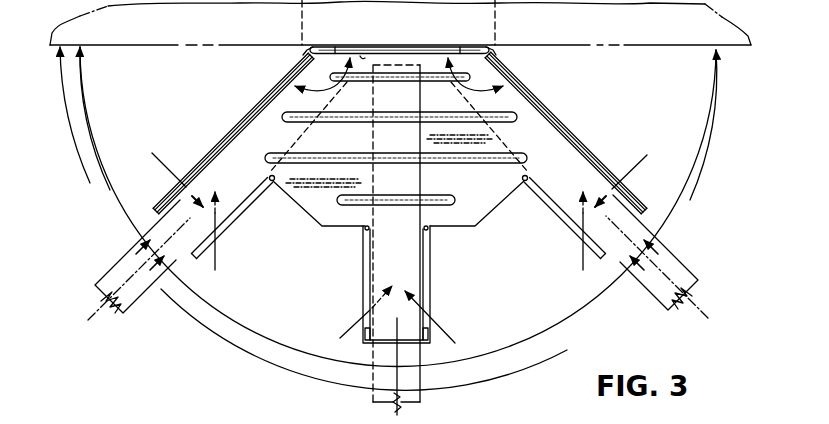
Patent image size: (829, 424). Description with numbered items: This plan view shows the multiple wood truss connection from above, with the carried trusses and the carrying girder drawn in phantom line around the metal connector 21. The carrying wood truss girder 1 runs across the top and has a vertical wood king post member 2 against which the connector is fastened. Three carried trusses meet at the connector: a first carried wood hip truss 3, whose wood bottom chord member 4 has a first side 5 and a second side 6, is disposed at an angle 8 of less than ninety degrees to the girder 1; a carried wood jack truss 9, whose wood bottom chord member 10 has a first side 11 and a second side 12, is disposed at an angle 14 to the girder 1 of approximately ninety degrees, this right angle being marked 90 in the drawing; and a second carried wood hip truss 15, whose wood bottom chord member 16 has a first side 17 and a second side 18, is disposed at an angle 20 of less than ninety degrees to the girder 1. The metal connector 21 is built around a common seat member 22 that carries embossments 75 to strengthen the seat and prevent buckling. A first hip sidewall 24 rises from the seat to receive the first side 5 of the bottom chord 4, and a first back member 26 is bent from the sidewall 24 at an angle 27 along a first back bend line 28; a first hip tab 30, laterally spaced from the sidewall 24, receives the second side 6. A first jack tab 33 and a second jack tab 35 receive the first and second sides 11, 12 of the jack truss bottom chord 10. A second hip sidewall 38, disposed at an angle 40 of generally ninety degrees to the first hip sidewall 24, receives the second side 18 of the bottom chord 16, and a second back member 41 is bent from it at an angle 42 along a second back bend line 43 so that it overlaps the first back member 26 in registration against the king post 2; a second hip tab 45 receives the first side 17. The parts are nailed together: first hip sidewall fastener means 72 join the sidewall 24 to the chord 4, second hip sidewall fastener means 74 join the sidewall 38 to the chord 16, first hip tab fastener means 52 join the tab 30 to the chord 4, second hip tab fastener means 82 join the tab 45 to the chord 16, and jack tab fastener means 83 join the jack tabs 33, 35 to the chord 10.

The carrying wood truss girder 1 is at (166, 50).
The vertical wood king post member 2 is at (502, 24).
The first carried wood hip truss 3 is at (136, 310).
The wood bottom chord member 4 is at (112, 312).
The first side 5 is at (148, 233).
The second side 6 is at (182, 262).
The angle 8 is at (104, 168).
The carried wood jack truss 9 is at (426, 381).
The wood bottom chord member 10 is at (418, 402).
The first side 11 is at (386, 390).
The second side 12 is at (424, 355).
The angle 14 is at (110, 230).
The second carried wood hip truss 15 is at (676, 304).
The wood bottom chord member 16 is at (700, 280).
The first side 17 is at (639, 282).
The second side 18 is at (676, 253).
The angle 20 is at (704, 133).
The metal connector 21 is at (579, 127).
The common seat member 22 is at (488, 206).
The first hip sidewall 24 is at (216, 150).
The first back member 26 is at (363, 57).
The angle 27 is at (330, 93).
The first back bend line 28 is at (294, 73).
The first hip tab 30 is at (250, 206).
The first jack tab 33 is at (363, 277).
The second jack tab 35 is at (433, 272).
The second hip sidewall 38 is at (640, 202).
The angle 40 is at (508, 355).
The second back member 41 is at (388, 44).
The angle 42 is at (458, 93).
The second back bend line 43 is at (500, 53).
The second hip tab 45 is at (550, 210).
The first hip tab fastener means 52 is at (216, 244).
The first hip sidewall fastener means 72 is at (170, 172).
The second hip sidewall fastener means 74 is at (627, 176).
The embossments 75 is at (343, 156).
The second hip tab fastener means 82 is at (582, 250).
The jack tab fastener means 83 is at (356, 322).
The angle 90 is at (85, 132).